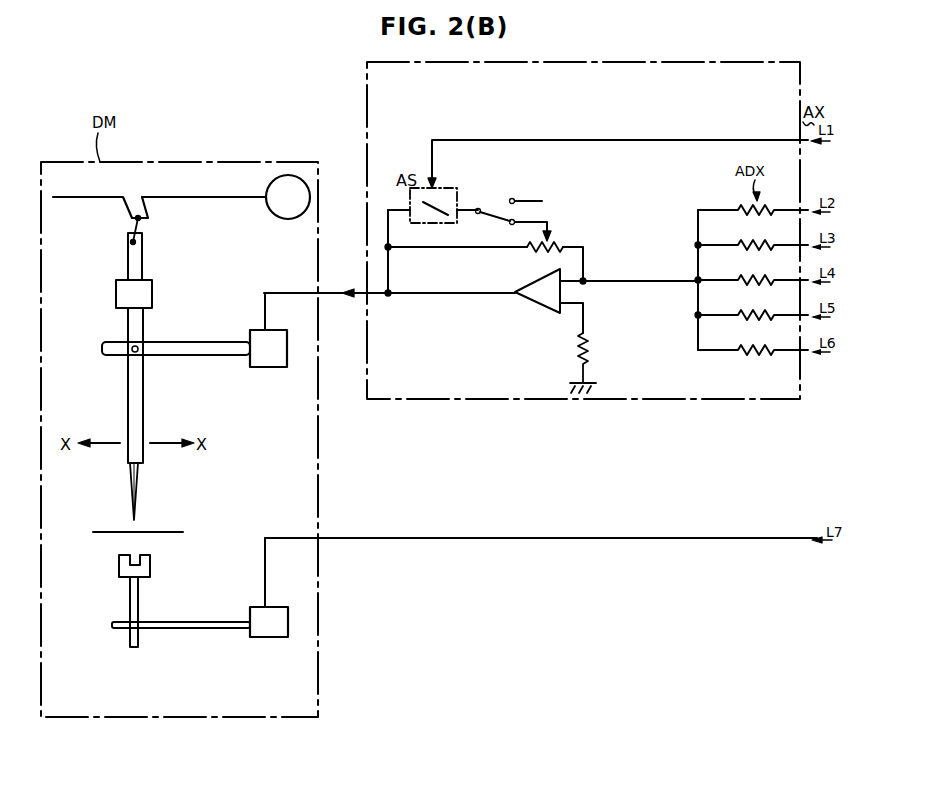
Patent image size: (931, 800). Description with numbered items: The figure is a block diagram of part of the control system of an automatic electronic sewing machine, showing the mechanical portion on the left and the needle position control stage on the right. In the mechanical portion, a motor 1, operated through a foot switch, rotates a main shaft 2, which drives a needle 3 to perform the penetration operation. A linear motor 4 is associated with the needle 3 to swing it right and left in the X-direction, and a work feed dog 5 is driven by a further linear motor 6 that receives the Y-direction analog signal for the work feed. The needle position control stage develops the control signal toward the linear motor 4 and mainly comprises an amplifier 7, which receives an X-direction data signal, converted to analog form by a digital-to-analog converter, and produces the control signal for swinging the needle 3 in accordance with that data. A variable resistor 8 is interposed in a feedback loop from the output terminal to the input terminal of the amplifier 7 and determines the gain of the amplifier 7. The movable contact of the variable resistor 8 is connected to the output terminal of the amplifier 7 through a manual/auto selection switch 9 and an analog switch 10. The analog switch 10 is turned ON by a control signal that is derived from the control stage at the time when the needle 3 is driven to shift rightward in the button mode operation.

The motor 1 is at (282, 218).
The main shaft 2 is at (208, 200).
The needle 3 is at (139, 484).
The linear motor 4 is at (268, 367).
The work feed dog 5 is at (151, 566).
The linear motor 6 is at (268, 637).
The amplifier 7 is at (520, 297).
The variable resistor 8 is at (560, 240).
The manual/auto selection switch 9 is at (498, 207).
The analog switch 10 is at (443, 188).